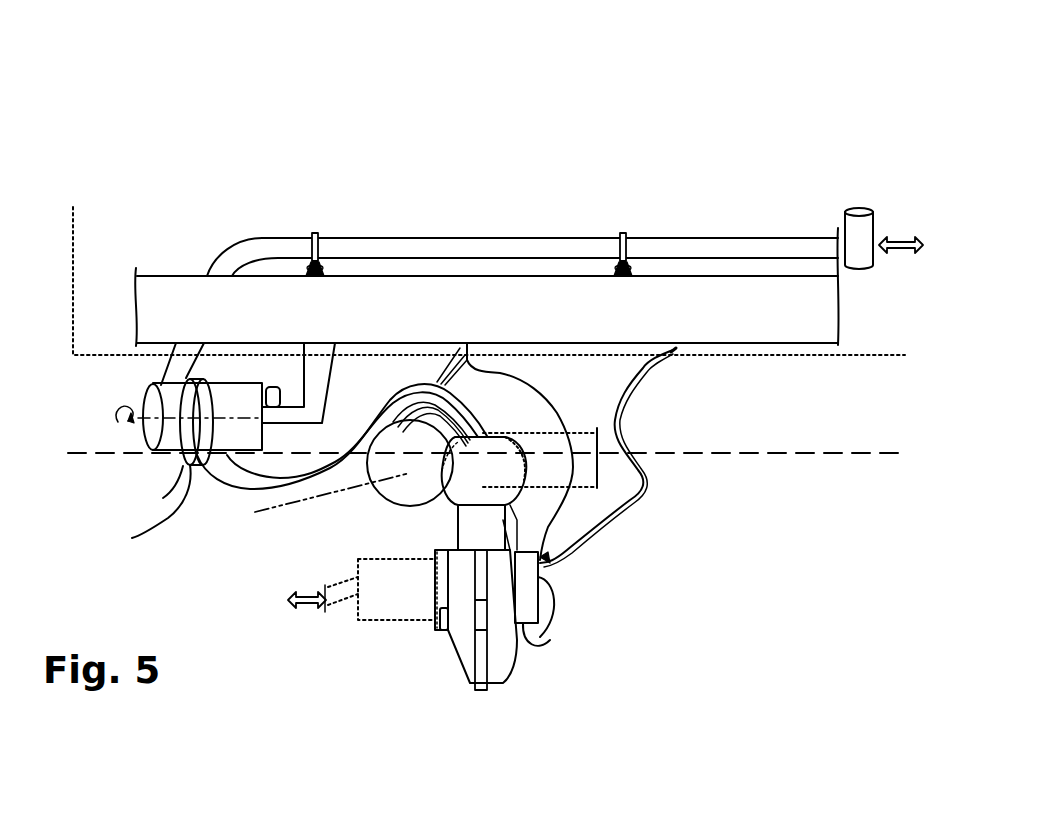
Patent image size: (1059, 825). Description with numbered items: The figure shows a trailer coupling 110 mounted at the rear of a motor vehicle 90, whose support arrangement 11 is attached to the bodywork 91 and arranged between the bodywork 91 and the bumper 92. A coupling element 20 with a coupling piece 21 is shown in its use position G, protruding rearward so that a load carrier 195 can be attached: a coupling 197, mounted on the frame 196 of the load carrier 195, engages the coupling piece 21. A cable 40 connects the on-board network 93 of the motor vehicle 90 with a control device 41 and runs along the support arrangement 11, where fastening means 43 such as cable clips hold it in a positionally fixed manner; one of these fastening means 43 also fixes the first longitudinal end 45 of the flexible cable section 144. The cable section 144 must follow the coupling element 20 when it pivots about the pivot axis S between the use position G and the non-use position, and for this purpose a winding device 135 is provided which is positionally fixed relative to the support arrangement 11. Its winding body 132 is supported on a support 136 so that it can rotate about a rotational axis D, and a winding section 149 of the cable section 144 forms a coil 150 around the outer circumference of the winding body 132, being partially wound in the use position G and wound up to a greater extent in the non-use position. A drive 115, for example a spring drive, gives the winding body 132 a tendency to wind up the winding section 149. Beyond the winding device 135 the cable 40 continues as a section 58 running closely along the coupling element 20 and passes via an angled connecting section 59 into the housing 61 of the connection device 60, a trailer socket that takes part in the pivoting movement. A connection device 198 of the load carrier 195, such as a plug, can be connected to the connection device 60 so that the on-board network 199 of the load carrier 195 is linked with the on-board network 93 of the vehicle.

The trailer coupling 110 is at (777, 170).
The motor vehicle 90 is at (73, 236).
The bodywork 91 is at (73, 285).
The bumper 92 is at (78, 452).
The on-board network 93 is at (901, 239).
The support arrangement 11 is at (183, 274).
The first longitudinal end 45 is at (243, 246).
The fastening means 43 is at (315, 232).
The cable 40 is at (532, 246).
The control device 41 is at (862, 214).
The winding device 135 is at (150, 394).
The rotational axis D is at (118, 415).
The drive 115 is at (286, 384).
The support 136 is at (327, 365).
The winding body 132 is at (168, 447).
The coil 150 is at (163, 493).
The winding section 149 is at (132, 538).
The cable section 144 is at (251, 481).
The pivot axis S is at (272, 507).
The coupling 197 is at (416, 470).
The frame 196 is at (585, 480).
The load carrier 195 is at (585, 434).
The coupling piece 21 is at (440, 527).
The coupling element 20 is at (514, 659).
The housing 61 is at (536, 565).
The connecting section 59 is at (553, 600).
The section 58 is at (550, 638).
The connection device 60 is at (434, 627).
The use position G is at (473, 677).
The connection device 198 is at (358, 622).
The on-board network 199 is at (324, 598).